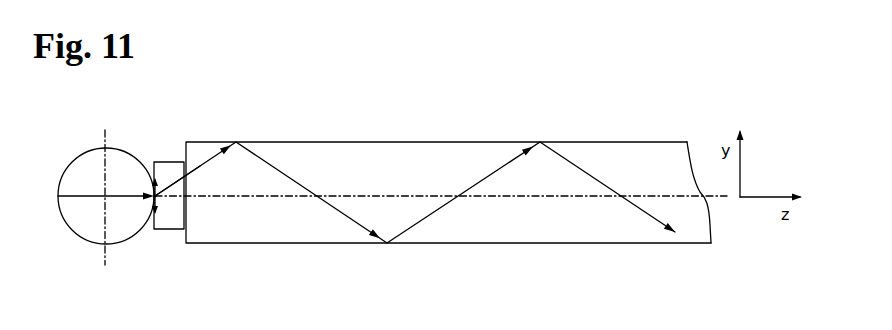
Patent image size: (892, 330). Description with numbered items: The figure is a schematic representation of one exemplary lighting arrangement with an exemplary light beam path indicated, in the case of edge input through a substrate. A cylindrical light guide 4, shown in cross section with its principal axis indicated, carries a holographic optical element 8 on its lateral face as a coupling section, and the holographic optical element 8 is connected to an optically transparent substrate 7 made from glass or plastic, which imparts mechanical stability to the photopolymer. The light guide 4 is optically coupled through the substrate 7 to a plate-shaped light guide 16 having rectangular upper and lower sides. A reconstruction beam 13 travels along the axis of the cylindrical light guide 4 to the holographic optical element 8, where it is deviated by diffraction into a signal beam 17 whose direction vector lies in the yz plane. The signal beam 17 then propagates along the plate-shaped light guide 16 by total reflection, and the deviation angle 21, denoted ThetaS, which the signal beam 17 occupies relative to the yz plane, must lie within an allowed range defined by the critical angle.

The cylindrical light guide 4 is at (99, 181).
The reconstruction beam 13 is at (92, 200).
The substrate 7 is at (173, 210).
The holographic optical element 8 is at (157, 187).
The plate-shaped light guide 16 is at (448, 170).
The signal beam 17 is at (415, 170).
The deviation angle 21 is at (191, 233).